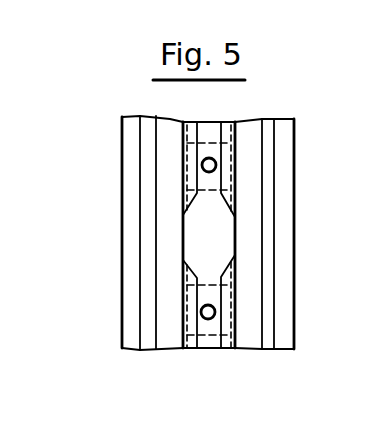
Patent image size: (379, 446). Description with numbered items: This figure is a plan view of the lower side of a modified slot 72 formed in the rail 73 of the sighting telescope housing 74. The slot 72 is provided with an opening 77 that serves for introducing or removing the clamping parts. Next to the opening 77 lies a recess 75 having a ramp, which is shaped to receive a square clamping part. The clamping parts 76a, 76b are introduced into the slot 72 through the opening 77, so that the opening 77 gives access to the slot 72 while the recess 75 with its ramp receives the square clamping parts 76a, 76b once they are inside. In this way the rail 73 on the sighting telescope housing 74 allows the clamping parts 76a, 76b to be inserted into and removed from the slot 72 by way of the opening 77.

The slot 72 is at (226, 122).
The rail 73 is at (247, 145).
The sighting telescope housing 74 is at (280, 163).
The recess 75 is at (235, 201).
The clamping part 76a is at (186, 168).
The clamping part 76b is at (186, 320).
The opening 77 is at (213, 233).